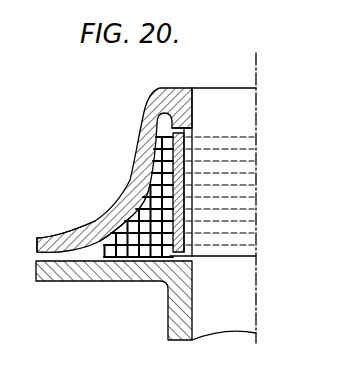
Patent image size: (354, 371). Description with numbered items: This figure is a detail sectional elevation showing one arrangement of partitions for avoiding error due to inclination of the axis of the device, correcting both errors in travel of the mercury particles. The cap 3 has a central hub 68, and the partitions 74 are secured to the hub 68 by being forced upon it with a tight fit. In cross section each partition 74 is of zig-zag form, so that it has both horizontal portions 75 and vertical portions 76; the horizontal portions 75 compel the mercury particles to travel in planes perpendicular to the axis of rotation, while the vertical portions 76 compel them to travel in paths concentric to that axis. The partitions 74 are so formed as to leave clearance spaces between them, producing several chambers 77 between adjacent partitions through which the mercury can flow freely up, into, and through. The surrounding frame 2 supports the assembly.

The frame / base plate 2 is at (37, 279).
The cap 3 is at (157, 97).
The hub 68 is at (178, 128).
The partitions 74 is at (158, 159).
The horizontal portions 75 is at (126, 203).
The vertical portions 76 is at (97, 227).
The chambers 77 is at (126, 241).